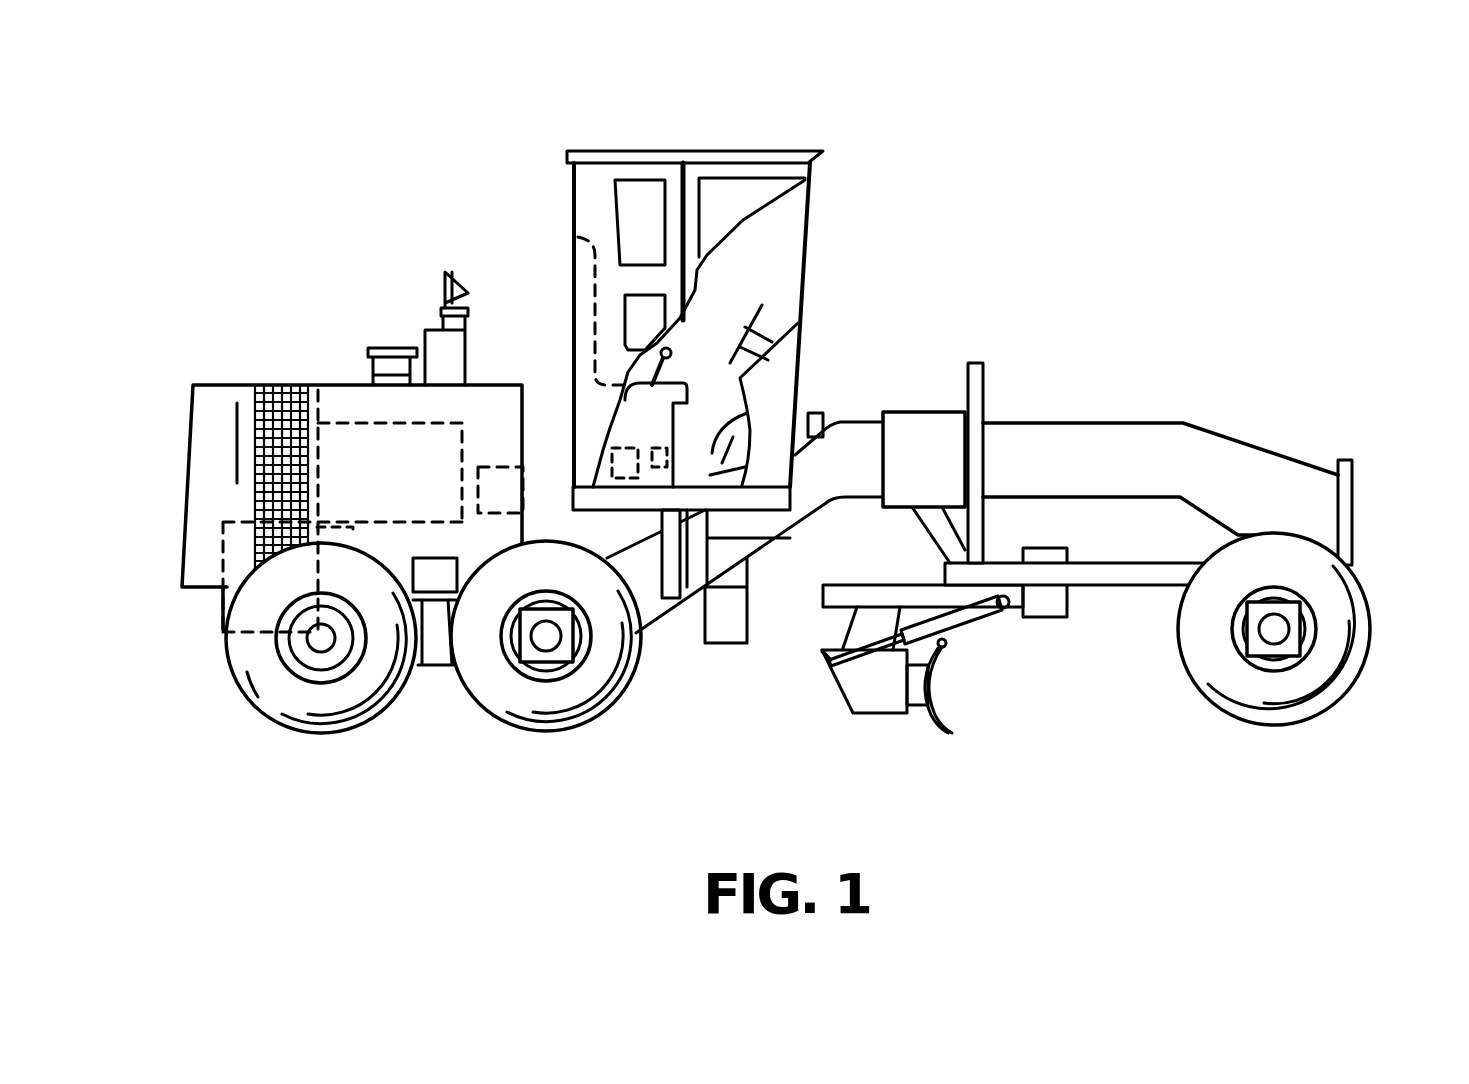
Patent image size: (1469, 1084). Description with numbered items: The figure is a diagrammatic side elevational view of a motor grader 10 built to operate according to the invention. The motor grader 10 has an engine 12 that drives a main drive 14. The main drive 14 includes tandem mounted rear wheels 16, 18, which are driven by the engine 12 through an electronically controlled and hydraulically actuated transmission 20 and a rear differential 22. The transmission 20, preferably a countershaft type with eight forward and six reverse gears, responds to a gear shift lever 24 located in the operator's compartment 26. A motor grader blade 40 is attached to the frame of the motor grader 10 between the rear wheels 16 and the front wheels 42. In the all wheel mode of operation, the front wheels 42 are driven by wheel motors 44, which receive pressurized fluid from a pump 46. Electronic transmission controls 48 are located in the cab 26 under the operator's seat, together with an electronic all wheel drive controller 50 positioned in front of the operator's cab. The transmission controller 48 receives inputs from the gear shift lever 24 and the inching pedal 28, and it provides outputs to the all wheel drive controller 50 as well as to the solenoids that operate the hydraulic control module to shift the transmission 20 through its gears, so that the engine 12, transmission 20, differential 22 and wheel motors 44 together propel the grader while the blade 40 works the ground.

The motor grader 10 is at (1112, 273).
The engine 12 is at (380, 433).
The main drive 14 is at (223, 602).
The rear wheel 16 is at (600, 716).
The rear wheel 18 is at (257, 702).
The transmission 20 is at (421, 668).
The rear differential 22 is at (445, 667).
The gear shift lever 24 is at (655, 365).
The operator's compartment 26 is at (763, 152).
The inching pedal 28 is at (752, 417).
The motor grader blade 40 is at (937, 693).
The front wheel 42 is at (1340, 698).
The wheel motor 44 is at (1270, 652).
The pump 46 is at (347, 527).
The electronic transmission controls 48 is at (608, 428).
The all wheel drive controller 50 is at (822, 418).